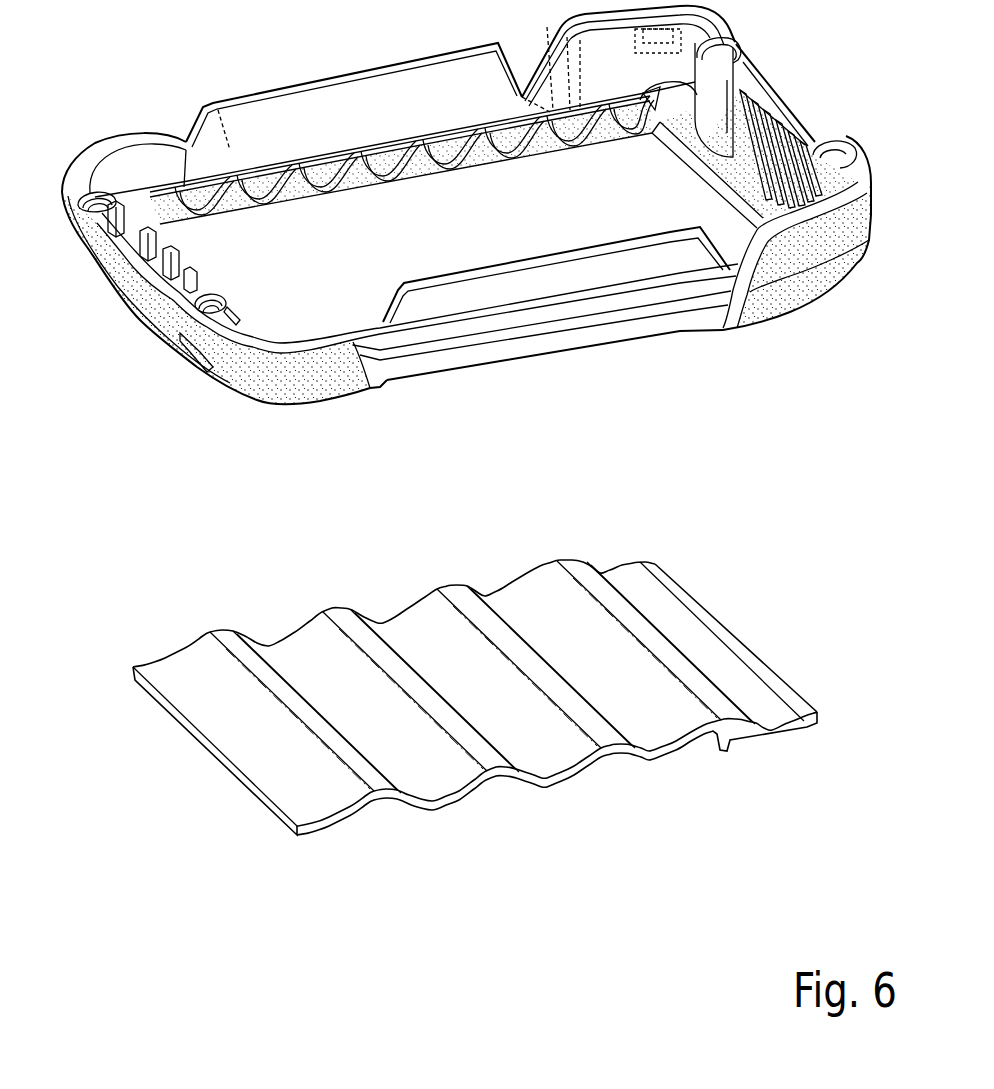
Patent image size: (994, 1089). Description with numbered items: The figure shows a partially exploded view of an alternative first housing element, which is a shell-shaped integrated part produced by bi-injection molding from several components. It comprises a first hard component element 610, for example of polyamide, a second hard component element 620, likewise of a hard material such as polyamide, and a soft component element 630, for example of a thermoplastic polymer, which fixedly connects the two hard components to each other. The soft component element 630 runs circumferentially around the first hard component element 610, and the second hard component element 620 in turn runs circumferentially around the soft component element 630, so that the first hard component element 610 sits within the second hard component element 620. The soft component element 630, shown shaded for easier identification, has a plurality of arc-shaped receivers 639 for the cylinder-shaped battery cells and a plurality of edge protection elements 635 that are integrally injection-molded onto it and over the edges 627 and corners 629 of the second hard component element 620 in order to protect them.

The first hard component element 610 is at (657, 640).
The second hard component element 620 is at (777, 107).
The edges 627 is at (125, 307).
The corners 629 is at (850, 283).
The soft component element 630 is at (330, 187).
The edge protection elements 635 is at (467, 270).
The arc-shaped receivers 639 is at (270, 185).